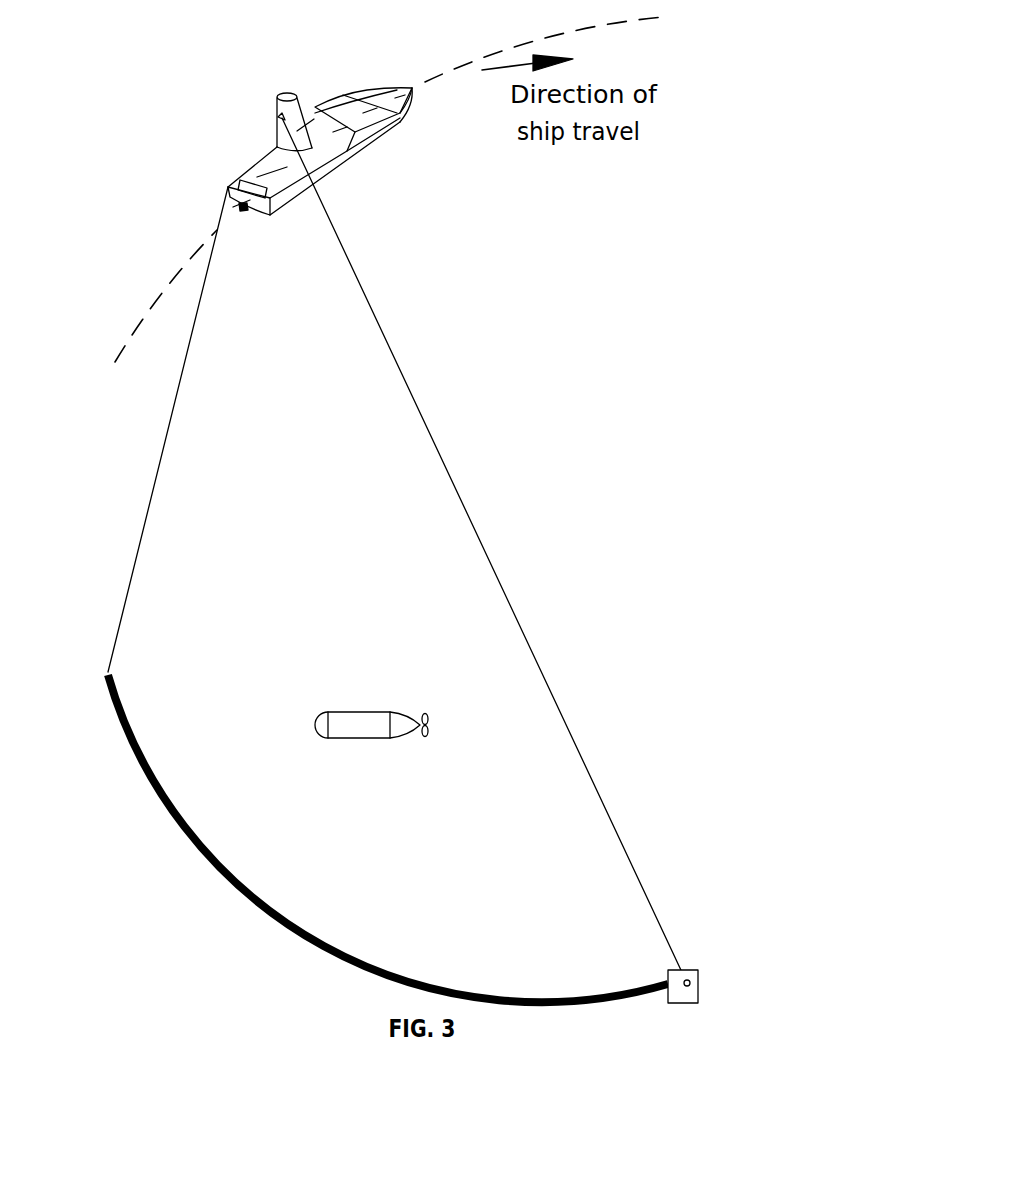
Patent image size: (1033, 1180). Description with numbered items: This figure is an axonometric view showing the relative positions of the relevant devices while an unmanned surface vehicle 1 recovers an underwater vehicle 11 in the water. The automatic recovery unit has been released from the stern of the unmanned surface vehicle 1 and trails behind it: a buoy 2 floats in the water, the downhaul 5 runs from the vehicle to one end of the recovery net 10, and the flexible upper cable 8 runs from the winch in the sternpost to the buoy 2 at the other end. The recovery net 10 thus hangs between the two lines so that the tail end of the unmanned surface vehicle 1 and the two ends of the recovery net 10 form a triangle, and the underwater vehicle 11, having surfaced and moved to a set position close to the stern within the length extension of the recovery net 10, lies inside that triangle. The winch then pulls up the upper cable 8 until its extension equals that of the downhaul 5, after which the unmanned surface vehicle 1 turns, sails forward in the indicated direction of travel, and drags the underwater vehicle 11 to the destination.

The unmanned surface vehicle 1 is at (337, 155).
The buoy 2 is at (697, 988).
The downhaul 5 is at (172, 413).
The upper cable 8 is at (513, 613).
The recovery net 10 is at (323, 947).
The underwater vehicle 11 is at (358, 710).